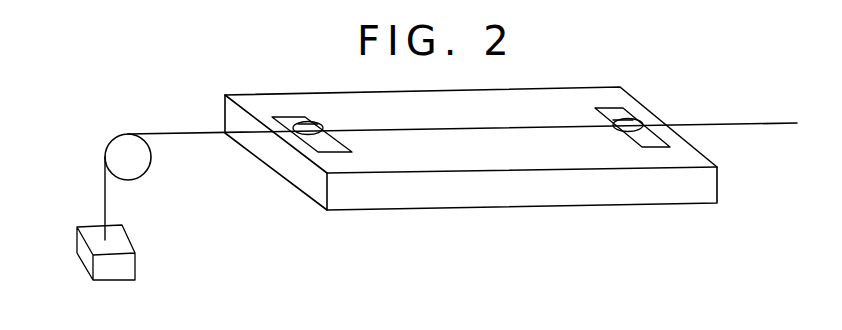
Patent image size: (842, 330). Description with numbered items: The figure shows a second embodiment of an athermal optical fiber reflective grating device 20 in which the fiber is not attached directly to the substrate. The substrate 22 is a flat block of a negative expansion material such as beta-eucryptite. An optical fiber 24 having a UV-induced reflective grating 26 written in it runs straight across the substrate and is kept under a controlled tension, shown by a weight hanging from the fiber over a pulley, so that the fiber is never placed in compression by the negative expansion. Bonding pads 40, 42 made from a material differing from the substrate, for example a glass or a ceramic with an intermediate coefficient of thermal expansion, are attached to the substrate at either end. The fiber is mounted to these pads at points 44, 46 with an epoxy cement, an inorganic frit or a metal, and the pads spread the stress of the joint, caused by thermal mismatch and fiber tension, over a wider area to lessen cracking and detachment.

The optical fiber reflective grating device 20 is at (471, 182).
The substrate 22 is at (620, 193).
The optical fiber 24 is at (195, 134).
The reflective grating 26 is at (478, 127).
The bonding pad 40 is at (290, 114).
The bonding pad 42 is at (620, 98).
The attachment point 44 is at (323, 126).
The attachment point 46 is at (613, 118).